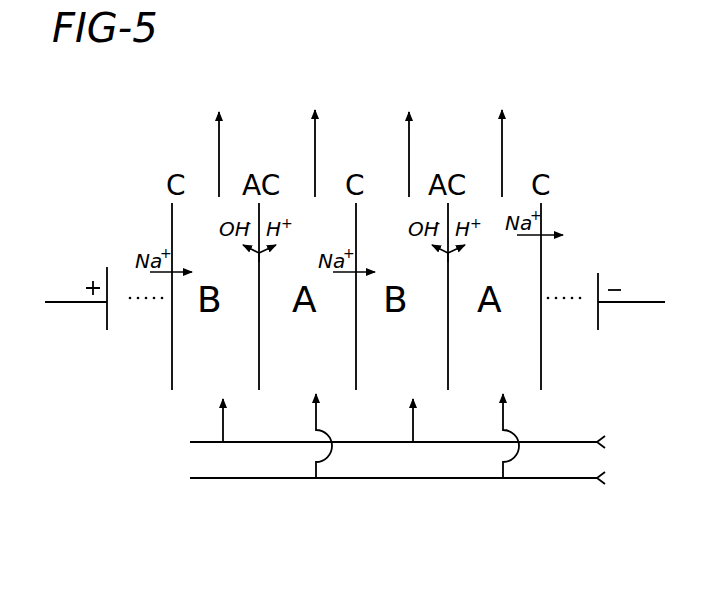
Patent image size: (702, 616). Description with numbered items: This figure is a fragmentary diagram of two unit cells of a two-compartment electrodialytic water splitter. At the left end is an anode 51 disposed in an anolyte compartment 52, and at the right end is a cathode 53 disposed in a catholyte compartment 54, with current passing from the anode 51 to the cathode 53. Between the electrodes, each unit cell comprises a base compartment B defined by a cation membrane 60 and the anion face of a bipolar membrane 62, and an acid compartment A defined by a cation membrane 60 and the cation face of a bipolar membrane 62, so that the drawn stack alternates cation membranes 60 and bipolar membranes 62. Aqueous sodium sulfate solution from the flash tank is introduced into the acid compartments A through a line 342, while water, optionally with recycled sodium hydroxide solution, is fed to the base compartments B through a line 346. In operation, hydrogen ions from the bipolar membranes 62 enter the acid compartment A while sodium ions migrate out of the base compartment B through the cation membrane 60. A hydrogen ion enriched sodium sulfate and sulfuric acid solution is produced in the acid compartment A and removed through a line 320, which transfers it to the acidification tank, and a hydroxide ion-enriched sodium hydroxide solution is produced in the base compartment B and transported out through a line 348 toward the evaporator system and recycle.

The anode 51 is at (104, 317).
The anolyte compartment 52 is at (154, 341).
The cathode 53 is at (600, 321).
The catholyte compartment 54 is at (580, 340).
The cation membrane 60 is at (172, 378).
The bipolar membrane 62 is at (259, 379).
The line 320 is at (315, 138).
The line 342 is at (587, 478).
The feed line 346 is at (584, 414).
The line 348 is at (219, 140).